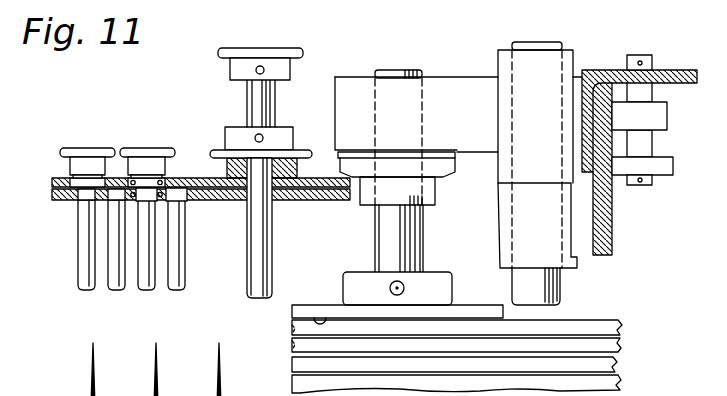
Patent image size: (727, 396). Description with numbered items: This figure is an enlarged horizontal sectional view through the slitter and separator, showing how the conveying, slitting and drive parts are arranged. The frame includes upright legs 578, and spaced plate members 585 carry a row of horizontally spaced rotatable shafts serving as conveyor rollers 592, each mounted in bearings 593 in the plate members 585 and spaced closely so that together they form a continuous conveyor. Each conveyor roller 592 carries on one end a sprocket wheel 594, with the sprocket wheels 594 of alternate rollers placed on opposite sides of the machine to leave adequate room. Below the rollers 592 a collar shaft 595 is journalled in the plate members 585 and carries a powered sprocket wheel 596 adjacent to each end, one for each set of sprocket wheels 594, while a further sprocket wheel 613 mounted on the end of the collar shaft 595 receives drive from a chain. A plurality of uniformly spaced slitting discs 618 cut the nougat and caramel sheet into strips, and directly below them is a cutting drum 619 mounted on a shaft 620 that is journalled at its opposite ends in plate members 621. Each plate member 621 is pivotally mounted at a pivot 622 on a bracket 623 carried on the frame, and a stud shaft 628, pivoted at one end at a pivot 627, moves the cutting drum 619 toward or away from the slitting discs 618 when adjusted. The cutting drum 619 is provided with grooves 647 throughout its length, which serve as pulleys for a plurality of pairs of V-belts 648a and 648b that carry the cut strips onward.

The upright legs 578 is at (687, 70).
The plate members 585 is at (62, 201).
The conveyor rollers 592 is at (150, 265).
The bearings 593 is at (153, 203).
The sprocket wheel 594 is at (137, 148).
The collar shaft 595 is at (248, 271).
The sprocket wheel 596 is at (215, 150).
The sprocket wheel 613 is at (283, 49).
The slitting discs 618 is at (155, 369).
The cutting drum 619 is at (465, 303).
The shaft 620 is at (383, 233).
The plate members 621 is at (452, 87).
The pivot 622 is at (560, 290).
The bracket 623 is at (572, 262).
The pivot 627 is at (663, 120).
The stud shaft 628 is at (643, 187).
The grooves 647 is at (317, 313).
The V-belts 648a is at (618, 347).
The V-belts 648b is at (615, 368).